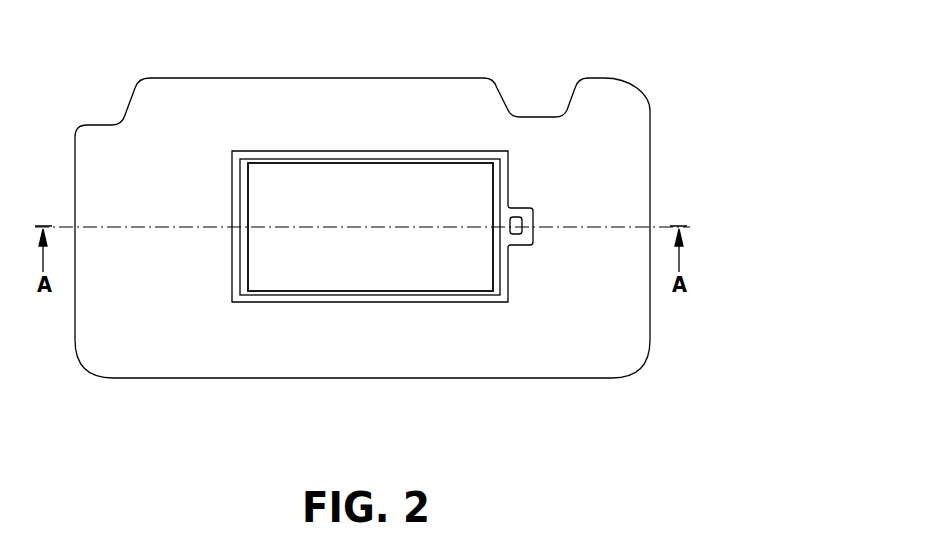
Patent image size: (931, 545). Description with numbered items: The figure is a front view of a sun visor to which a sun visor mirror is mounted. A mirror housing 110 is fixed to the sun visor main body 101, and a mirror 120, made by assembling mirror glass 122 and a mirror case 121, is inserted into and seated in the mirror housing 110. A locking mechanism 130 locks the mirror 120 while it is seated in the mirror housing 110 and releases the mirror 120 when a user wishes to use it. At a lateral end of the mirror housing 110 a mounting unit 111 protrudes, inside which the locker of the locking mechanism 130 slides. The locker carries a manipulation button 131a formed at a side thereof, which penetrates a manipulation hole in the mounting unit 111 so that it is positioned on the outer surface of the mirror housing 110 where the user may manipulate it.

The sun visor main body 101 is at (588, 147).
The mirror housing 110 is at (405, 151).
The mounting unit 111 is at (520, 247).
The mirror 120 is at (370, 310).
The mirror case 121 is at (399, 302).
The mirror glass 122 is at (303, 258).
The locking mechanism 130 is at (656, 201).
The manipulation button 131a is at (518, 217).